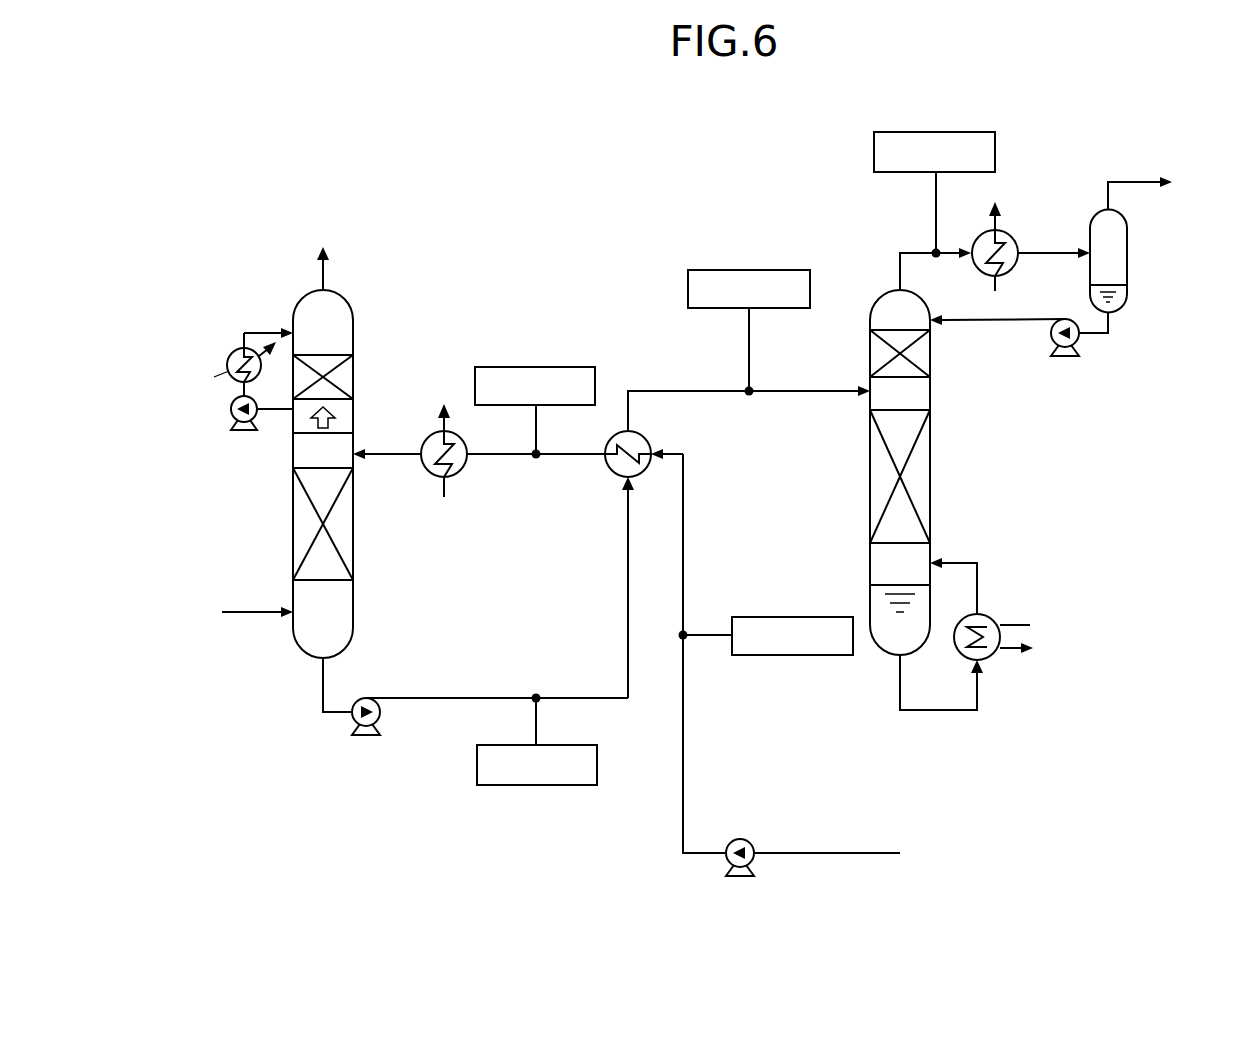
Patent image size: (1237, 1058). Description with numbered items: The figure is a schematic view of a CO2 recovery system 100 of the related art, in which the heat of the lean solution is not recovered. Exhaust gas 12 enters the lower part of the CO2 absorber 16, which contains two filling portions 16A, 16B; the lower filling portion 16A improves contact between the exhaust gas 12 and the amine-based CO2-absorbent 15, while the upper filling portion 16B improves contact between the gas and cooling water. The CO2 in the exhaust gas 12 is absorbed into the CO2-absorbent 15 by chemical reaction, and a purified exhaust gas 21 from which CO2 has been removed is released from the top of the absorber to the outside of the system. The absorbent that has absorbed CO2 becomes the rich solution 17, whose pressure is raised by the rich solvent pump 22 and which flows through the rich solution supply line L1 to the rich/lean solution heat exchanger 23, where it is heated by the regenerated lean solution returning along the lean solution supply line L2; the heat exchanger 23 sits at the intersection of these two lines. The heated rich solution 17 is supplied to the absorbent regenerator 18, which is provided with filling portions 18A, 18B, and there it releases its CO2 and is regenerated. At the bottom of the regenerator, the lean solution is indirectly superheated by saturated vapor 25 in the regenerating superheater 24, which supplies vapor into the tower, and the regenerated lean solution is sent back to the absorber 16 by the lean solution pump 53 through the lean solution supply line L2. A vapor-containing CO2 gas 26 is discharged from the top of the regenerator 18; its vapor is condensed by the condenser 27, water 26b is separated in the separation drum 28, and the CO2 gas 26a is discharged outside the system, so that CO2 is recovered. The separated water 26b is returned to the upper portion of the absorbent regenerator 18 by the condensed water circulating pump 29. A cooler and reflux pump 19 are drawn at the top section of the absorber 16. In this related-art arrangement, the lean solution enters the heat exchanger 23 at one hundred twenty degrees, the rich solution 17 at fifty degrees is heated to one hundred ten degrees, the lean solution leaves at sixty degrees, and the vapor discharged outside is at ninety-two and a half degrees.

The CO2 recovery system 100 is at (620, 152).
The exhaust gas 12 is at (240, 618).
The CO2-absorbent 15 is at (407, 445).
The CO2 absorber 16 is at (321, 474).
The filling portion 16A is at (346, 531).
The filling portion 16B is at (346, 373).
The rich solution 17 is at (433, 707).
The absorbent regenerator 18 is at (899, 472).
The filling portion 18A is at (875, 485).
The filling portion 18B is at (874, 356).
The cooler and reflux pump 19 is at (257, 331).
The purified exhaust gas 21 is at (322, 273).
The rich solvent pump 22 is at (362, 698).
The rich/lean solution heat exchanger 23 is at (650, 443).
The regenerating superheater 24 is at (990, 616).
The saturated vapor 25 is at (1022, 625).
The CO2 gas 26 is at (896, 240).
The CO2 gas 26a is at (1141, 181).
The water 26b is at (987, 330).
The condenser 27 is at (1008, 232).
The separation drum 28 is at (1128, 254).
The condensed water circulating pump 29 is at (1078, 342).
The lean solution pump 53 is at (740, 838).
The rich solution supply line L1 is at (669, 388).
The lean solution supply line L2 is at (684, 583).